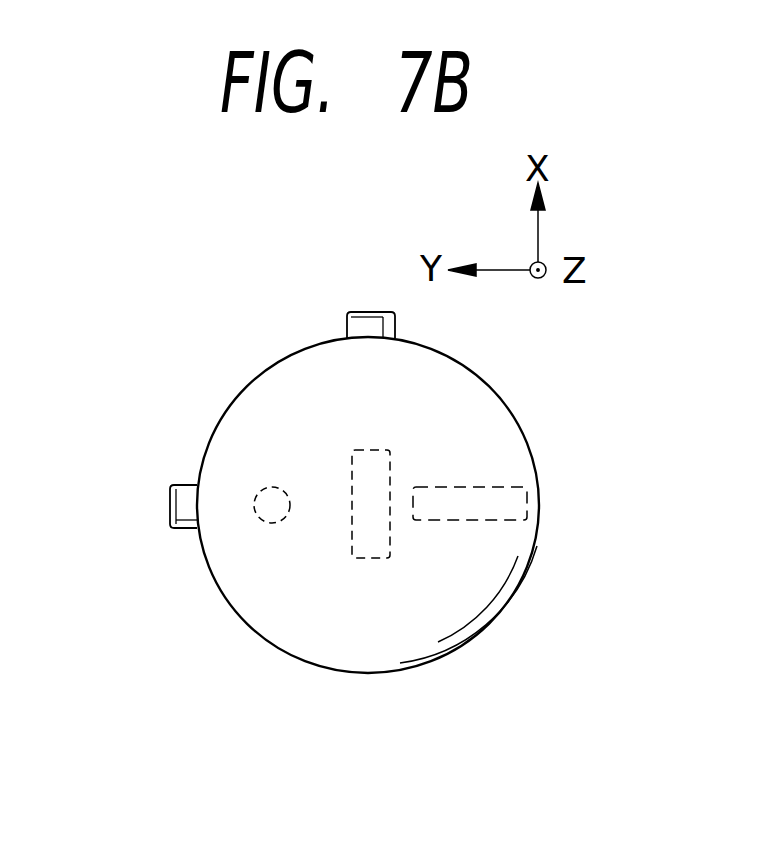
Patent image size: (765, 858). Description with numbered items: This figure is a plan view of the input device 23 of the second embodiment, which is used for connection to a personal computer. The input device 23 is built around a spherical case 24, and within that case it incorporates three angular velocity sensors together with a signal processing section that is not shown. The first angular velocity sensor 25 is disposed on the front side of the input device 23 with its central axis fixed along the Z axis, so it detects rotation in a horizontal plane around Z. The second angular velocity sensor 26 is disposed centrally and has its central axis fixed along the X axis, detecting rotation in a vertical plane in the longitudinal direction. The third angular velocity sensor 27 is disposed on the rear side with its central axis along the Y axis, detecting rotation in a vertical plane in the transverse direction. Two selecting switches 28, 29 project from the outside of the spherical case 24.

The input device 23 is at (222, 352).
The spherical case 24 is at (505, 422).
The first angular velocity sensor 25 is at (268, 522).
The second angular velocity sensor 26 is at (370, 558).
The third angular velocity sensor 27 is at (500, 517).
The selecting switch 28 is at (180, 512).
The selecting switch 29 is at (370, 322).